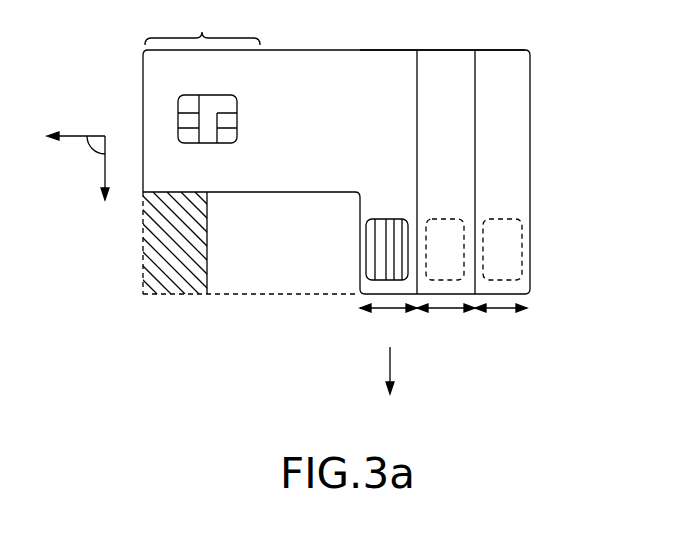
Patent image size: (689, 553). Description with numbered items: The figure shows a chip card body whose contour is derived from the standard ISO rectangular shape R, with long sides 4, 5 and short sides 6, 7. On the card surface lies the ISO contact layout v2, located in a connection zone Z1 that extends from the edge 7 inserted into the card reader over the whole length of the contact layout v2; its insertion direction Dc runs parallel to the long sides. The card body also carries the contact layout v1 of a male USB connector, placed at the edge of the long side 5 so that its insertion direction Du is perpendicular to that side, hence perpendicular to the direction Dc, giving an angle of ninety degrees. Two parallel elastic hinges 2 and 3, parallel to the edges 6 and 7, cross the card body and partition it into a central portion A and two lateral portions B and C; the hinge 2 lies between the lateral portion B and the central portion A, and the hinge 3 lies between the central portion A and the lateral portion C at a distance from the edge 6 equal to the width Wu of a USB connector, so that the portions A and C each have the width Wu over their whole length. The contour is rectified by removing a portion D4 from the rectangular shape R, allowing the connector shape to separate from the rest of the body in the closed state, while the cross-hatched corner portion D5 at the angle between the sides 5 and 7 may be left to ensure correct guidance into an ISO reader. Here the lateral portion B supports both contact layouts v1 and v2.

The elastic hinge 2 is at (418, 157).
The elastic hinge 3 is at (476, 157).
The long side 4 is at (296, 50).
The long side 5 is at (359, 296).
The short side 6 is at (531, 120).
The short side 7 is at (143, 90).
The central portion A is at (446, 60).
The lateral portion B is at (348, 58).
The lateral portion C is at (501, 60).
The connection zone Z1 is at (202, 23).
The contact layout of a male USB connector v1 is at (372, 222).
The contact layout conforming to the ISO 7816 standard v2 is at (238, 103).
The rectangular shape R is at (143, 268).
The removed portion D4 is at (245, 287).
The cross-hatched portion D5 is at (178, 268).
The width of a male USB connector Wu is at (443, 325).
The insertion direction Du is at (246, 279).
The insertion direction Dc is at (65, 143).